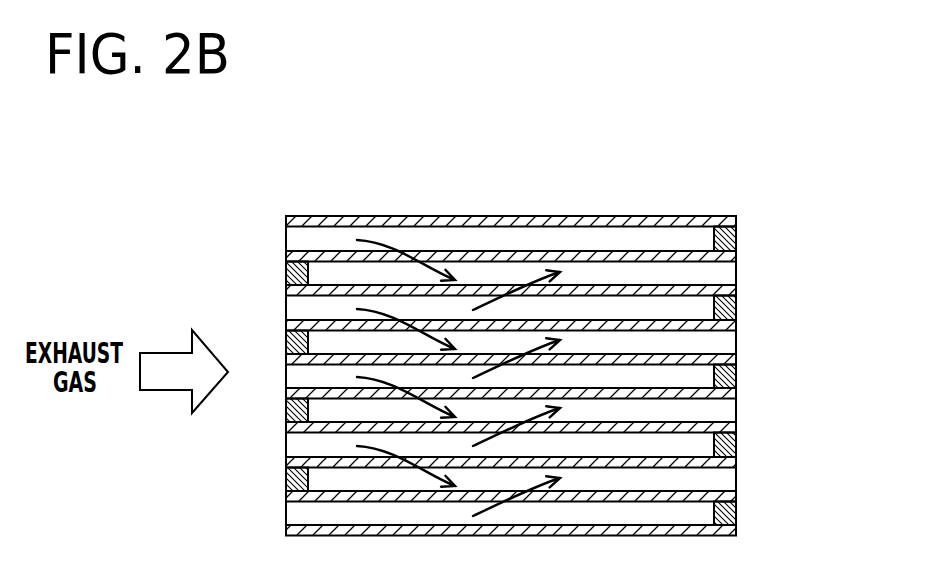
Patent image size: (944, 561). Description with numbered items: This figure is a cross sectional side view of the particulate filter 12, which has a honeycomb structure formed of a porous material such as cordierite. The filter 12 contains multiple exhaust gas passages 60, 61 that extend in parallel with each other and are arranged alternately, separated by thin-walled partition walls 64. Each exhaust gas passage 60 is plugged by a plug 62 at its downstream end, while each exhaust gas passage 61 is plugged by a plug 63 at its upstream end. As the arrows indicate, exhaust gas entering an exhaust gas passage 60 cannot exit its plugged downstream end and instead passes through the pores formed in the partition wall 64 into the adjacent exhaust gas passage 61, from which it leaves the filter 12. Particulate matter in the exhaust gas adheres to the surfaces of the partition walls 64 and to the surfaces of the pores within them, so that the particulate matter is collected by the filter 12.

The filter 12 is at (620, 212).
The exhaust gas passage 60 is at (685, 240).
The exhaust gas passage 61 is at (286, 239).
The plug 62 is at (737, 238).
The plug 63 is at (286, 273).
The partition wall 64 is at (498, 293).